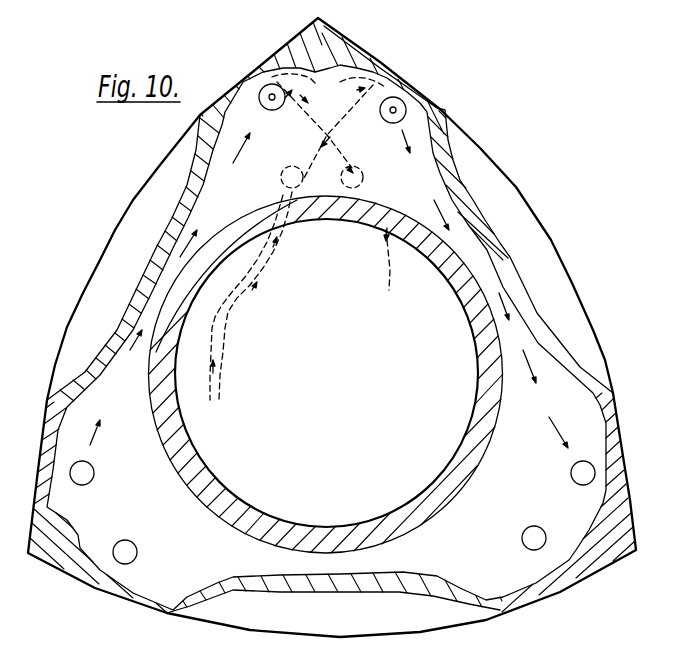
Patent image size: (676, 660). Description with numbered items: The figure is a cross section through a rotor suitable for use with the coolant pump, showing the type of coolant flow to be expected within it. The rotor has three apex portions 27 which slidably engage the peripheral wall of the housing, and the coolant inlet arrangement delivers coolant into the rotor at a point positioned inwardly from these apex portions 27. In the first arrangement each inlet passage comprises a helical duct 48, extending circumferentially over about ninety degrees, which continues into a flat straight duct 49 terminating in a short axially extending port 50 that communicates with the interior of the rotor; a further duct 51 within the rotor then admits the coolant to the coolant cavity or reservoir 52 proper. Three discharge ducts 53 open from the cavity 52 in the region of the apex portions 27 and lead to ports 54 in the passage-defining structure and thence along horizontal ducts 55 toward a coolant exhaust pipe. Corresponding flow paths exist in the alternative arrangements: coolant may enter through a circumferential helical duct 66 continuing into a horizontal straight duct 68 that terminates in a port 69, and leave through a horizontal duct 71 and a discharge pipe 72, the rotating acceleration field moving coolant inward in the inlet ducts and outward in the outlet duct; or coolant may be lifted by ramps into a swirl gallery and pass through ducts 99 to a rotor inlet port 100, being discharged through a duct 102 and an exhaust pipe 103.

The apex portions 27 is at (597, 562).
The helical duct 48 is at (254, 297).
The straight duct 49 is at (296, 296).
The port 50 is at (255, 194).
The further duct 51 is at (360, 106).
The coolant cavity 52 is at (340, 127).
The discharge ducts 53 is at (290, 104).
The ports 54 is at (379, 187).
The horizontal ducts 55 is at (391, 268).
The duct 66 is at (222, 330).
The horizontal straight duct 68 is at (296, 296).
The port 69 is at (255, 194).
The horizontal duct 71 is at (391, 268).
The discharge pipe 72 is at (379, 187).
The ducts 99 is at (275, 263).
The rotor inlet port 100 is at (282, 180).
The duct 102 is at (394, 224).
The exhaust pipe 103 is at (386, 188).